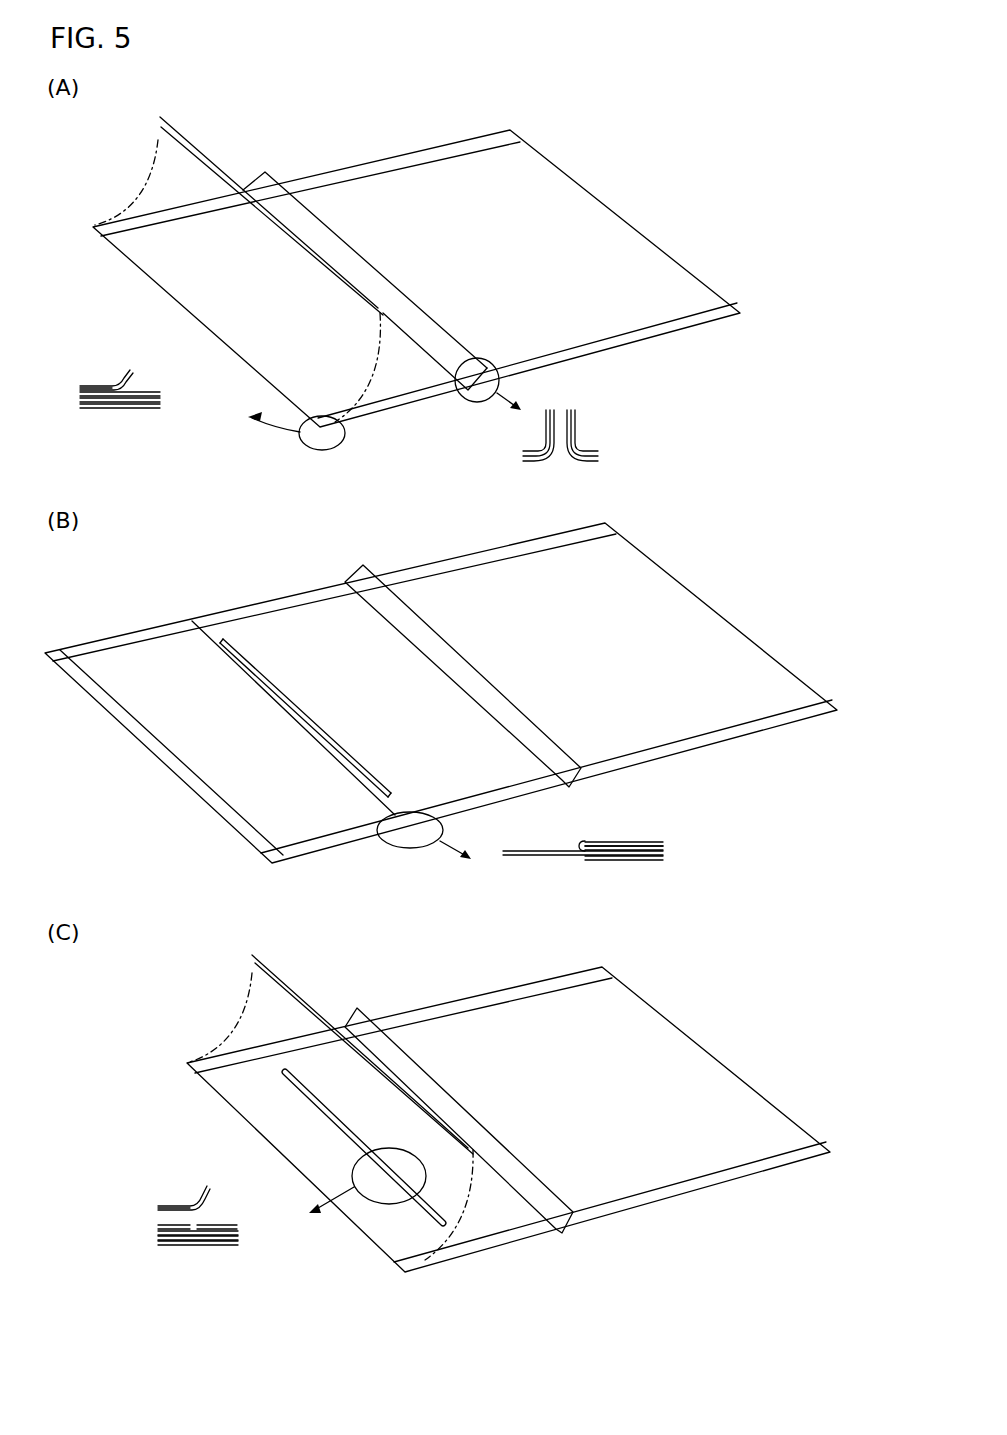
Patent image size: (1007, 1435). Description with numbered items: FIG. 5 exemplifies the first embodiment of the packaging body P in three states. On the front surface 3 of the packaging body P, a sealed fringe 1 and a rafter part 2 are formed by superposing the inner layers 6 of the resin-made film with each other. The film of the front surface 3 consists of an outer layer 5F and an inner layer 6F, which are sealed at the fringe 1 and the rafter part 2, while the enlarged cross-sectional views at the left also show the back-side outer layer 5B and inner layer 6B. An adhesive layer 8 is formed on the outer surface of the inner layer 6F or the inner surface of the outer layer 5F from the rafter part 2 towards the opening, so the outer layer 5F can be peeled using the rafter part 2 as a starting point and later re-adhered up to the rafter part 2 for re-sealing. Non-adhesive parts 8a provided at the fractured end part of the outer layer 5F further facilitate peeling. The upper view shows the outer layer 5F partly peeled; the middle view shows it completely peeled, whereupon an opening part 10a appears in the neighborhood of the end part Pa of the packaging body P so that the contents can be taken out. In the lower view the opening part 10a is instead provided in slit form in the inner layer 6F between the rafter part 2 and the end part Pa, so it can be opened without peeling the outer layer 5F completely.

The packaging body P is at (574, 161).
The end part Pa is at (157, 283).
The sealed fringe 1 is at (360, 168).
The rafter part 2 is at (285, 193).
The front surface 3 is at (527, 674).
The outer layer 5F is at (148, 172).
The outer layer 5B is at (160, 405).
The inner layer 6 is at (570, 410).
The inner layer 6F is at (160, 393).
The inner layer 6B is at (160, 399).
The adhesive layer 8 is at (128, 380).
The non-adhesive parts 8a is at (200, 157).
The opening part 10a is at (300, 707).